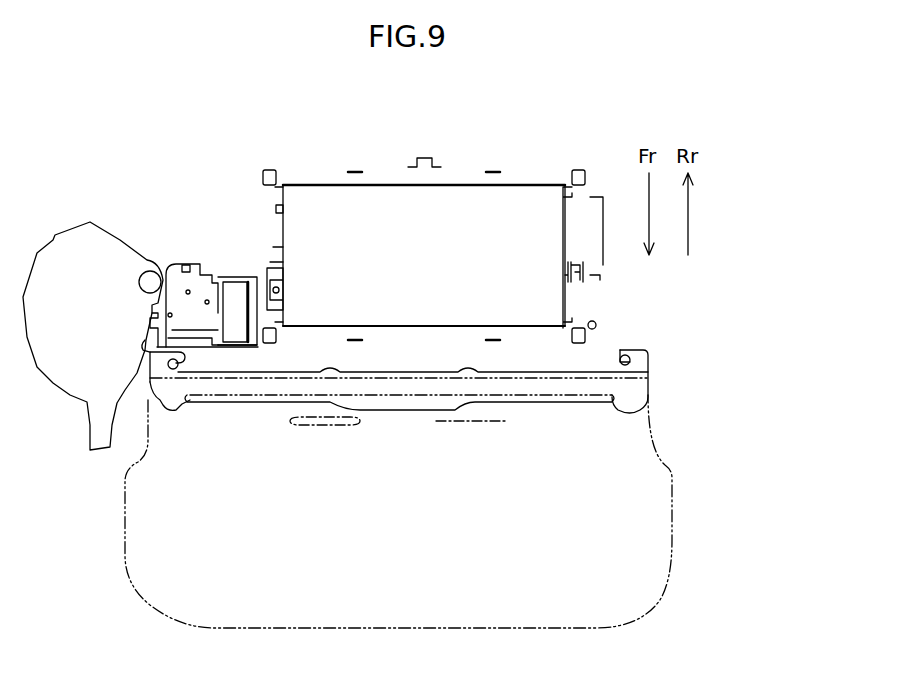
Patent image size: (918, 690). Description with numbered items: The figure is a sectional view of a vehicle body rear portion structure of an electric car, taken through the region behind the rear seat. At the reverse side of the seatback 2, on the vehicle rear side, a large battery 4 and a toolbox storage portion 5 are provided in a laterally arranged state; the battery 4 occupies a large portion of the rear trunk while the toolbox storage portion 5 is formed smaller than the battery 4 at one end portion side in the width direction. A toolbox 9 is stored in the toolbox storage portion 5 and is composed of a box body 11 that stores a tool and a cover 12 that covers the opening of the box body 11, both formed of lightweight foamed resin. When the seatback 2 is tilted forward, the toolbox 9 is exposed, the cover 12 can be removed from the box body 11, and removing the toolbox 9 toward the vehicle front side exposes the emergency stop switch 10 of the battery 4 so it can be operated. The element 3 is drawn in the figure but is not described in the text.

The seatback 2 is at (627, 388).
The housing (3) of unit (1) 3 is at (655, 525).
The battery 4 is at (462, 197).
The toolbox storage portion 5 is at (266, 362).
The toolbox 9 is at (190, 238).
The emergency stop switch 10 is at (270, 270).
The box body 11 is at (222, 280).
The cover 12 is at (222, 350).